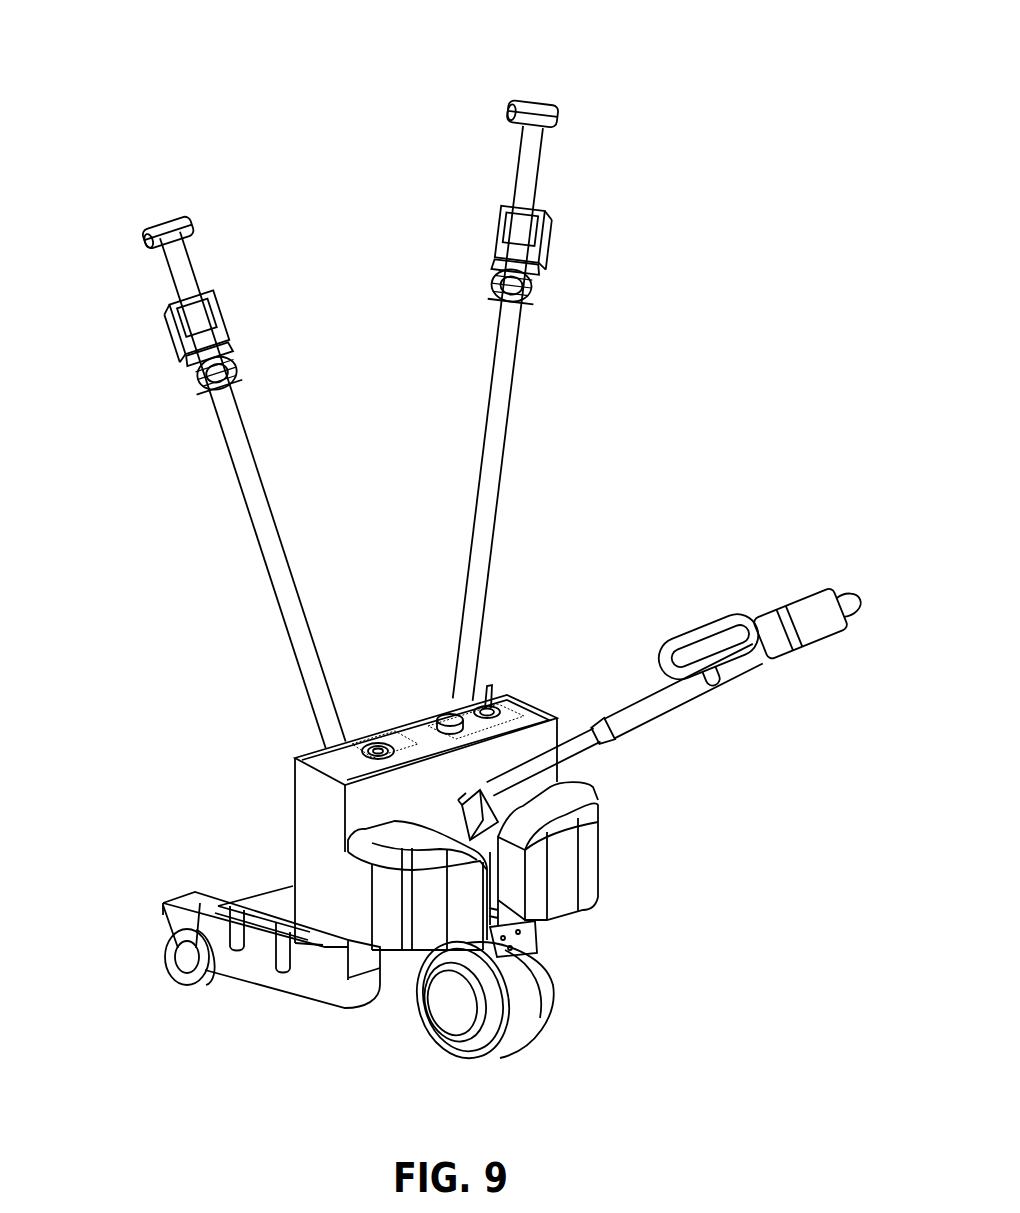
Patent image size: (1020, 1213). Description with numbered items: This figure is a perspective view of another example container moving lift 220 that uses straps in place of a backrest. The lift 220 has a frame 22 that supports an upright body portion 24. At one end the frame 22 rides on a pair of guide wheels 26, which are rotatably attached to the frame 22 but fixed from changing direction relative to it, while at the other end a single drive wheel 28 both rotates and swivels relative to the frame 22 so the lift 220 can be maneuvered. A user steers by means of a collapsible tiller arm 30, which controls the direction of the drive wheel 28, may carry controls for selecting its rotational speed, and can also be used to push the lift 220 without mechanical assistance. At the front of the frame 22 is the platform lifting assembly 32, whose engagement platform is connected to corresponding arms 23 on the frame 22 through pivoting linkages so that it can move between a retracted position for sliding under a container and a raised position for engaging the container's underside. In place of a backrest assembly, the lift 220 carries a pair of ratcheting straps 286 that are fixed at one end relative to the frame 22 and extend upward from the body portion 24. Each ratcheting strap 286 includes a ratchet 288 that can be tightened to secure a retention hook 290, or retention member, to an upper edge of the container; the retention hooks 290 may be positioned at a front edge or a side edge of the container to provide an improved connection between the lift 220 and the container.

The frame 22 is at (293, 1002).
The arm 23 is at (262, 968).
The body portion 24 is at (320, 812).
The guide wheel 26 is at (162, 968).
The drive wheel 28 is at (508, 1055).
The collapsible tiller arm 30 is at (637, 738).
The platform lifting assembly 32 is at (230, 964).
The lift 220 is at (688, 768).
The ratcheting strap 286 is at (182, 468).
The ratchet 288 is at (192, 362).
The retention hook 290 is at (150, 222).